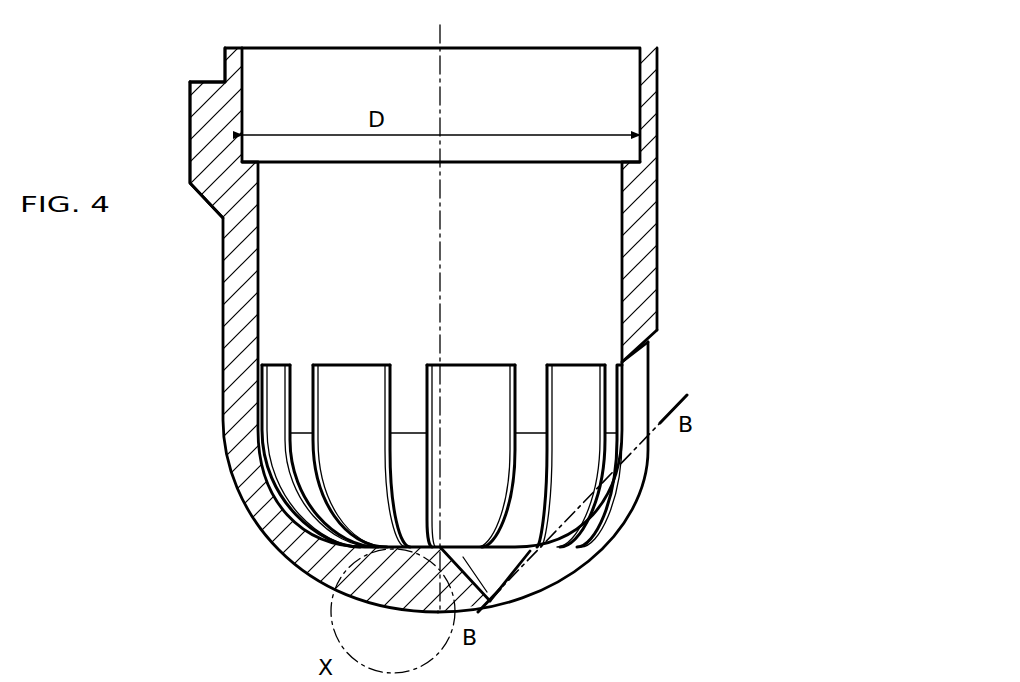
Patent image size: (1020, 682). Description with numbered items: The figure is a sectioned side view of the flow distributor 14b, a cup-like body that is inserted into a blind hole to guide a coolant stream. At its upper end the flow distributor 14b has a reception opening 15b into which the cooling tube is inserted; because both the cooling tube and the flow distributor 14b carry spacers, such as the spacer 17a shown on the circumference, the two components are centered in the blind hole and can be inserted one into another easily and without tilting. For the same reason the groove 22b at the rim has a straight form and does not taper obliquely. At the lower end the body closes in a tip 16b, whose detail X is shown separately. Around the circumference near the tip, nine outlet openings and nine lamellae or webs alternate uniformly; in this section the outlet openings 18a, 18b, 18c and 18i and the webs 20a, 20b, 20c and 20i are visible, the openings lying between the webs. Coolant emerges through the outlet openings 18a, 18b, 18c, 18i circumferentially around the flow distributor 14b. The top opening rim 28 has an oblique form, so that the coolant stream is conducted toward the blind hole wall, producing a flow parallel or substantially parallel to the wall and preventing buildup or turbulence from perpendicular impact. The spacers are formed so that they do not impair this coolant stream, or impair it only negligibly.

The flow distributor 14b is at (446, 349).
The reception opening 15b is at (484, 60).
The groove 22b is at (246, 112).
The spacer 17a is at (204, 133).
The top opening rim 28 is at (641, 357).
The web 20c is at (595, 532).
The outlet opening 18b is at (530, 552).
The tip 16b is at (494, 610).
The outlet opening 18i is at (278, 435).
The web 20i is at (293, 410).
The outlet opening 18a is at (346, 497).
The web 20a is at (405, 452).
The web 20b is at (527, 390).
The outlet opening 18c is at (596, 427).